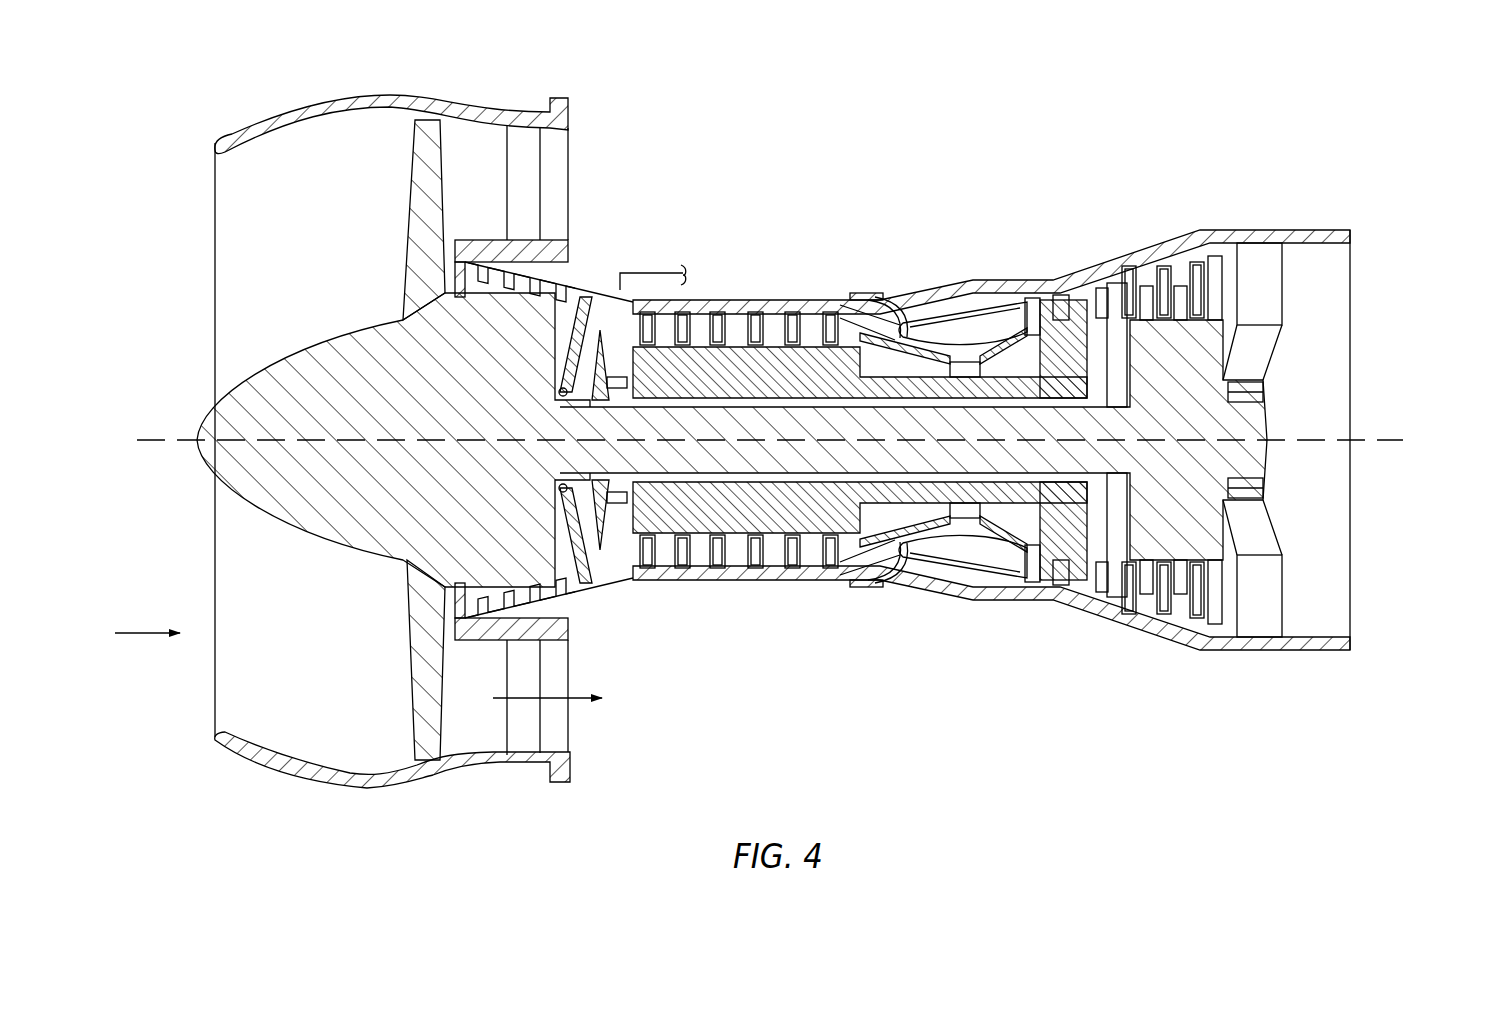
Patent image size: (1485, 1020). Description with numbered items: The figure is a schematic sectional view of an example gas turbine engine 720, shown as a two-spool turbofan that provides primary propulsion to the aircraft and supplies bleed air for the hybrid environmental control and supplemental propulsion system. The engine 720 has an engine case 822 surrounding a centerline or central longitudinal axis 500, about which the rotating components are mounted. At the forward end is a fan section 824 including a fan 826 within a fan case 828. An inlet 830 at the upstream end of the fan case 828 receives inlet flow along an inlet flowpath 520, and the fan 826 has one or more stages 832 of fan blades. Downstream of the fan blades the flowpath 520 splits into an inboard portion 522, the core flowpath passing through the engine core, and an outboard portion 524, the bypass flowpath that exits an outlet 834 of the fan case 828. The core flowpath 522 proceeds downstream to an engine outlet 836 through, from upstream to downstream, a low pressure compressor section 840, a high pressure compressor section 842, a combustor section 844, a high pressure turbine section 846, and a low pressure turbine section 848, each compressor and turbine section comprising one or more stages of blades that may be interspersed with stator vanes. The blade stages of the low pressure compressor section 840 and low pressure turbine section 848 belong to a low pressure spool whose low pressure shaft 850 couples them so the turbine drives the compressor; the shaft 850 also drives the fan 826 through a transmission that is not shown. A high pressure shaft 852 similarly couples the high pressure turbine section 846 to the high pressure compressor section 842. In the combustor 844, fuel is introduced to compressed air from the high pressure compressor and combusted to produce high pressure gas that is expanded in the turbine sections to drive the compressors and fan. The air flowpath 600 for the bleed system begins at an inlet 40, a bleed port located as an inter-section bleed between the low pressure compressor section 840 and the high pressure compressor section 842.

The gas turbine engine 720 is at (922, 137).
The central longitudinal axis 500 is at (160, 438).
The inlet flowpath 520 is at (142, 632).
The core flowpath 522 is at (528, 588).
The bypass flowpath 524 is at (552, 700).
The inlet 40 is at (607, 293).
The air flowpath 600 is at (667, 260).
The engine case 822 is at (813, 593).
The fan section 824 is at (382, 803).
The fan 826 is at (397, 672).
The fan case 828 is at (445, 772).
The inlet 830 is at (197, 697).
The stages of fan blades 832 is at (435, 630).
The outlet of the fan case 834 is at (577, 200).
The engine outlet 836 is at (1358, 592).
The low pressure compressor section 840 is at (535, 282).
The high pressure compressor section 842 is at (745, 330).
The combustor section 844 is at (960, 330).
The high pressure turbine section 846 is at (1047, 332).
The low pressure turbine section 848 is at (1190, 283).
The low pressure shaft 850 is at (963, 460).
The high pressure shaft 852 is at (1013, 497).